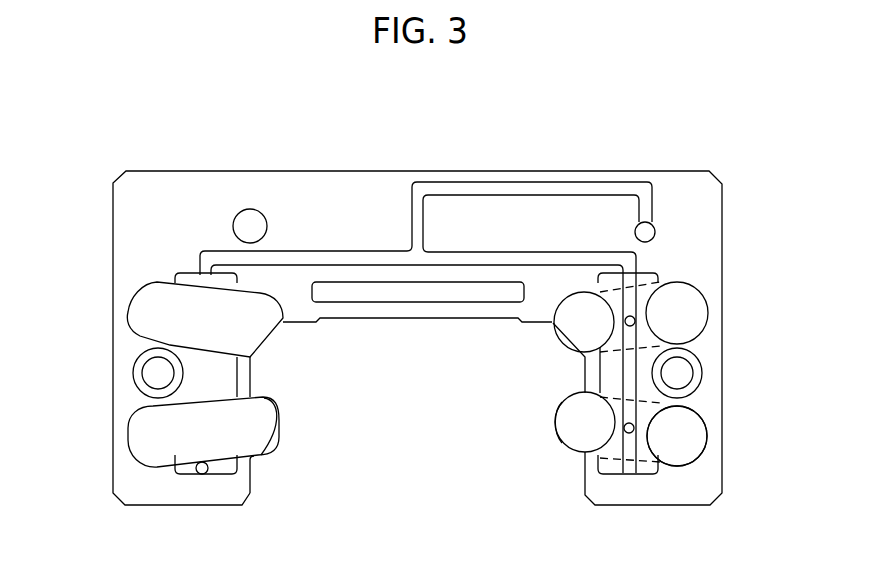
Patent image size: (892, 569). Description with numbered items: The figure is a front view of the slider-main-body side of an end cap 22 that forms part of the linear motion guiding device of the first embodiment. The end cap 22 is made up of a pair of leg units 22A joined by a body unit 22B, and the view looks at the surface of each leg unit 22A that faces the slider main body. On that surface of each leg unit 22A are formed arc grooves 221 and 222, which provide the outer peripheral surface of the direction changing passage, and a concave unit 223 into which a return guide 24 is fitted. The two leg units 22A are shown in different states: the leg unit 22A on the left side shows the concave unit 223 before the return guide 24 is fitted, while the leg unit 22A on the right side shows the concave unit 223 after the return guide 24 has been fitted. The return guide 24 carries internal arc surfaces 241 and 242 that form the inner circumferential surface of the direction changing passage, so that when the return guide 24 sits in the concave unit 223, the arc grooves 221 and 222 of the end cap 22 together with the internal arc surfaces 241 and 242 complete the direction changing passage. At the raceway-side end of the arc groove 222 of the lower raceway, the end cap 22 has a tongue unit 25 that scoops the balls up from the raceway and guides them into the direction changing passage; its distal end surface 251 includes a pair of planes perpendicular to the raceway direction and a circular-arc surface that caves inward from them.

The end cap 22 is at (627, 163).
The leg unit 22A is at (132, 365).
The body unit 22B is at (367, 203).
The arc groove 221 is at (130, 305).
The arc groove 222 is at (128, 430).
The concave unit 223 is at (209, 475).
The return guide 24 is at (598, 458).
The internal arc surface 241 is at (662, 325).
The internal arc surface 242 is at (672, 458).
The tongue unit 25 is at (263, 435).
The distal end surface 251 is at (274, 404).